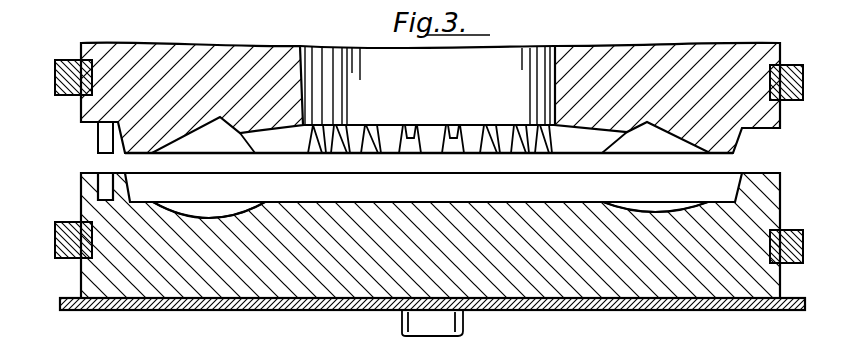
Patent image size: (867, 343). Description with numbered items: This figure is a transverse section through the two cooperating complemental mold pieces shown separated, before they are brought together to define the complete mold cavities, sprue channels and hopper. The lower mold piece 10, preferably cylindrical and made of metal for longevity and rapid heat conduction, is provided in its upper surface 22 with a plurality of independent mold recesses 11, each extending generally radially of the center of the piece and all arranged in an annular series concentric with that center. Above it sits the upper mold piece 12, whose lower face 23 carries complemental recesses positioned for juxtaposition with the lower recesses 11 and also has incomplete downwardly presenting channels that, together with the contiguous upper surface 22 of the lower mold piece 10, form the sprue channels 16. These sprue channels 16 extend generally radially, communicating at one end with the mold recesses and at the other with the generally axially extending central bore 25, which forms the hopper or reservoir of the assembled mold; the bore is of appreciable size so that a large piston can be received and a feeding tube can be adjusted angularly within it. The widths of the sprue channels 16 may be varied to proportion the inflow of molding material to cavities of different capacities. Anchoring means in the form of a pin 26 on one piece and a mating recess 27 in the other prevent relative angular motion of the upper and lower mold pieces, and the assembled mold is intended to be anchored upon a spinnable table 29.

The lower mold piece 10 is at (153, 283).
The mold recesses 11 is at (227, 208).
The upper mold piece 12 is at (130, 55).
The sprue channels 16 is at (296, 141).
The upper surface 22 is at (430, 187).
The lower face 23 is at (540, 62).
The central bore 25 is at (427, 85).
The pin 26 is at (103, 132).
The recess 27 is at (98, 170).
The spinnable table 29 is at (720, 311).